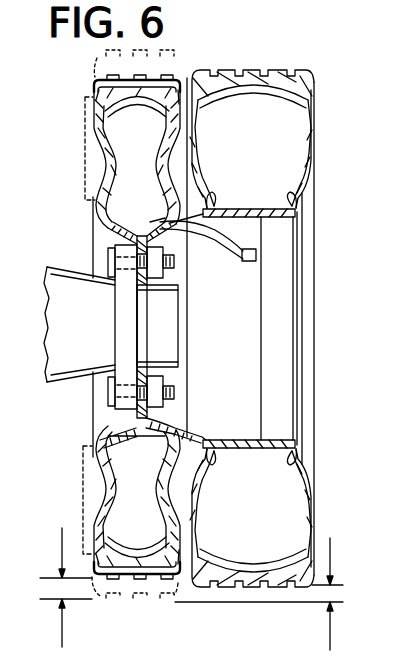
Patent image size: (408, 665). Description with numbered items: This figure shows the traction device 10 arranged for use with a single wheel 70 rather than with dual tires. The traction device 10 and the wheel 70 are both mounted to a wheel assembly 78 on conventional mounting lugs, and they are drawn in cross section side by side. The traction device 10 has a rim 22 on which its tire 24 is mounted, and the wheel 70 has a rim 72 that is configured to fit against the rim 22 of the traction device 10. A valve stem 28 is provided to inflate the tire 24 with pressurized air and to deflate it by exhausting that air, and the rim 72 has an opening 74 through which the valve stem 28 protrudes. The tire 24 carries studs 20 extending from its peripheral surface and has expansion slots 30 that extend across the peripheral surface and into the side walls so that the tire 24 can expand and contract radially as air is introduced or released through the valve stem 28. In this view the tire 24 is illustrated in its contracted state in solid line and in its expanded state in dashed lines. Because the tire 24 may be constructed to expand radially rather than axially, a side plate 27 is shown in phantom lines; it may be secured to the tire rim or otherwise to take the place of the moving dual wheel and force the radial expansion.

The traction device 10 is at (140, 608).
The studs 20 is at (162, 78).
The rim 22 is at (137, 225).
The tire 24 is at (93, 107).
The side plate 27 is at (83, 465).
The valve stem 28 is at (218, 258).
The expansion slots 30 is at (102, 83).
The wheel 70 is at (254, 70).
The rim 72 is at (173, 417).
The opening 74 is at (184, 227).
The wheel assembly 78 is at (179, 329).